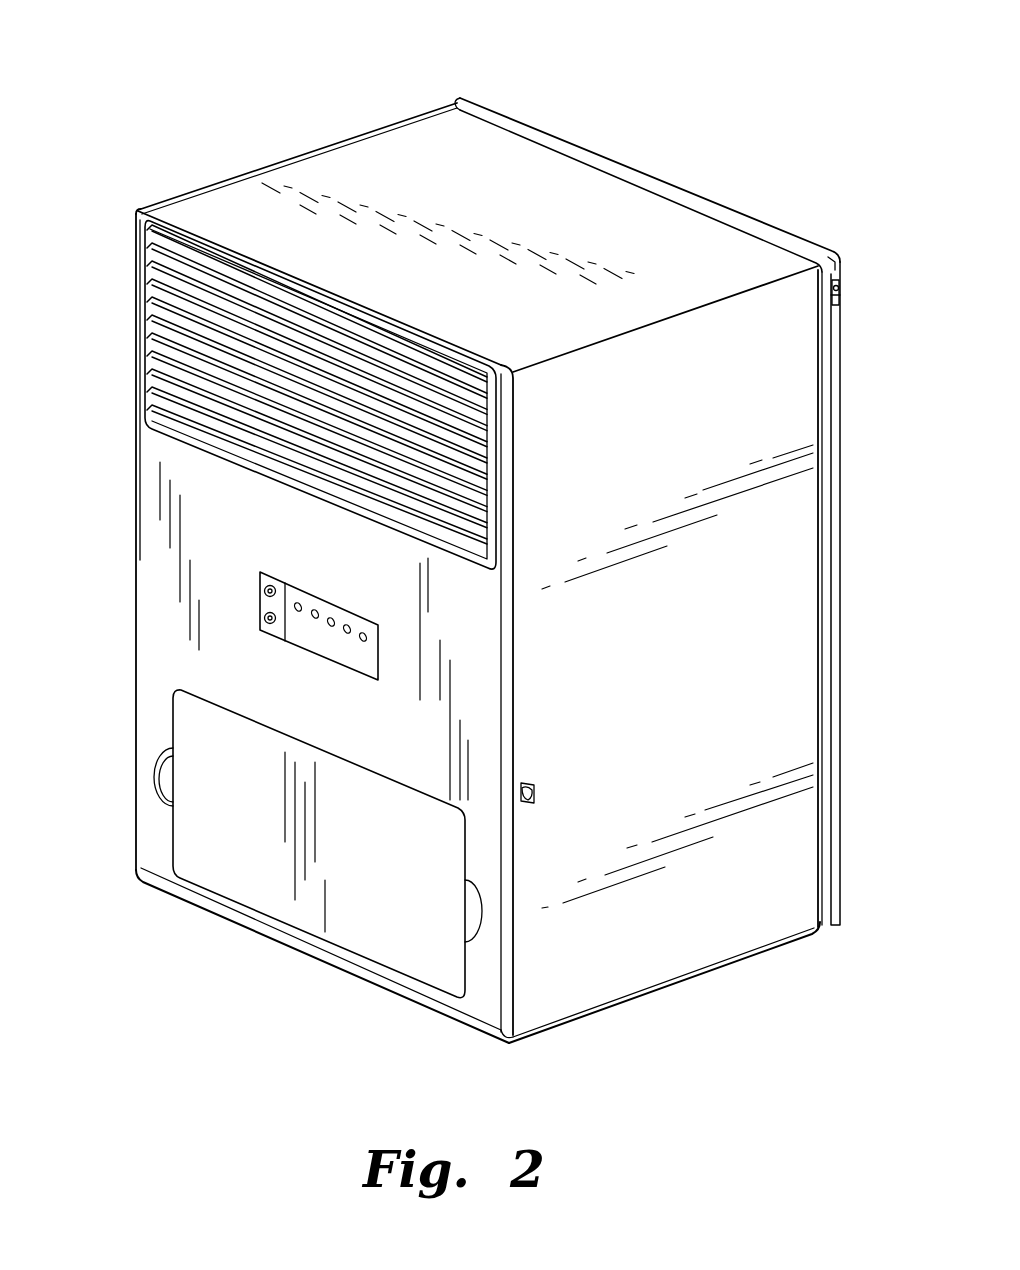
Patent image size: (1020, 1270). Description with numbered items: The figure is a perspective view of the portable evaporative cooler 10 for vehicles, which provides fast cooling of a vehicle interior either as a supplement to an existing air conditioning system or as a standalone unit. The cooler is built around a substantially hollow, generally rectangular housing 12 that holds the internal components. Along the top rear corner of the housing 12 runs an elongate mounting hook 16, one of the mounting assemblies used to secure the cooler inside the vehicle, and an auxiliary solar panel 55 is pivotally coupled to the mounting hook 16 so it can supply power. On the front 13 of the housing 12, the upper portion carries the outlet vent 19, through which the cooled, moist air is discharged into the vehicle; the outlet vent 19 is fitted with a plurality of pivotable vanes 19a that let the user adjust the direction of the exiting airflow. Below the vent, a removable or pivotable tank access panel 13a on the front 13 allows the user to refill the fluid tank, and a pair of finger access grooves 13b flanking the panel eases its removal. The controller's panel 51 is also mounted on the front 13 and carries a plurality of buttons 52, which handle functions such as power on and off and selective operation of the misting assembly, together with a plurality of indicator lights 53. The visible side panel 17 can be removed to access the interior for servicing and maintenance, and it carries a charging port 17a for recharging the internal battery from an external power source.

The portable evaporative cooler 10 is at (168, 78).
The housing 12 is at (110, 537).
The front 13 is at (148, 612).
The tank access panel 13a is at (245, 876).
The finger access grooves 13b is at (157, 756).
The mounting hook 16 is at (666, 178).
The side panel 17 is at (694, 650).
The charging port 17a is at (537, 792).
The outlet vent 19 is at (133, 350).
The pivotable vanes 19a is at (150, 297).
The panel 51 is at (343, 652).
The buttons 52 is at (264, 613).
The indicator lights 53 is at (363, 634).
The solar panel 55 is at (842, 400).